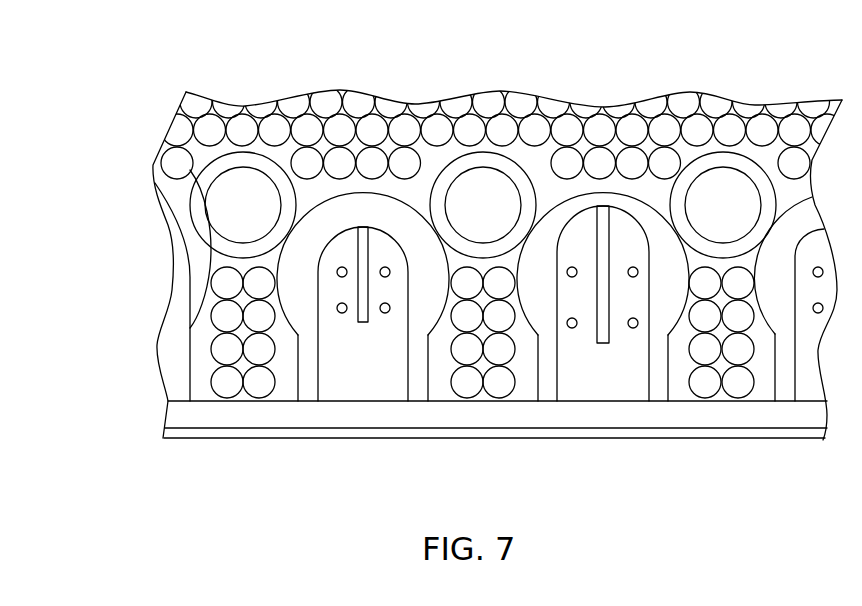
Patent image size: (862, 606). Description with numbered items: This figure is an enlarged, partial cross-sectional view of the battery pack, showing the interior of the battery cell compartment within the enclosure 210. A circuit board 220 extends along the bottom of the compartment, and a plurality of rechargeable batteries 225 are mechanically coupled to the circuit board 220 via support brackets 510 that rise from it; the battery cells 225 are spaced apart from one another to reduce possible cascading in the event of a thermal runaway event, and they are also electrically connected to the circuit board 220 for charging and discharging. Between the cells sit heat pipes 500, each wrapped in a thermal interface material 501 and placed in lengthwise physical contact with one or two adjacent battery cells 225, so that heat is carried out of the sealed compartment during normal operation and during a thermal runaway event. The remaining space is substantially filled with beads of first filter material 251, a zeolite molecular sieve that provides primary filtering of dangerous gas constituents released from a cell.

The first filter material 251 is at (535, 127).
The heat pipes 500 is at (223, 193).
The thermal interface material 501 is at (217, 242).
The rechargeable batteries 225 is at (423, 303).
The support brackets 510 is at (362, 377).
The circuit board 220 is at (193, 418).
The enclosure 210 is at (250, 432).